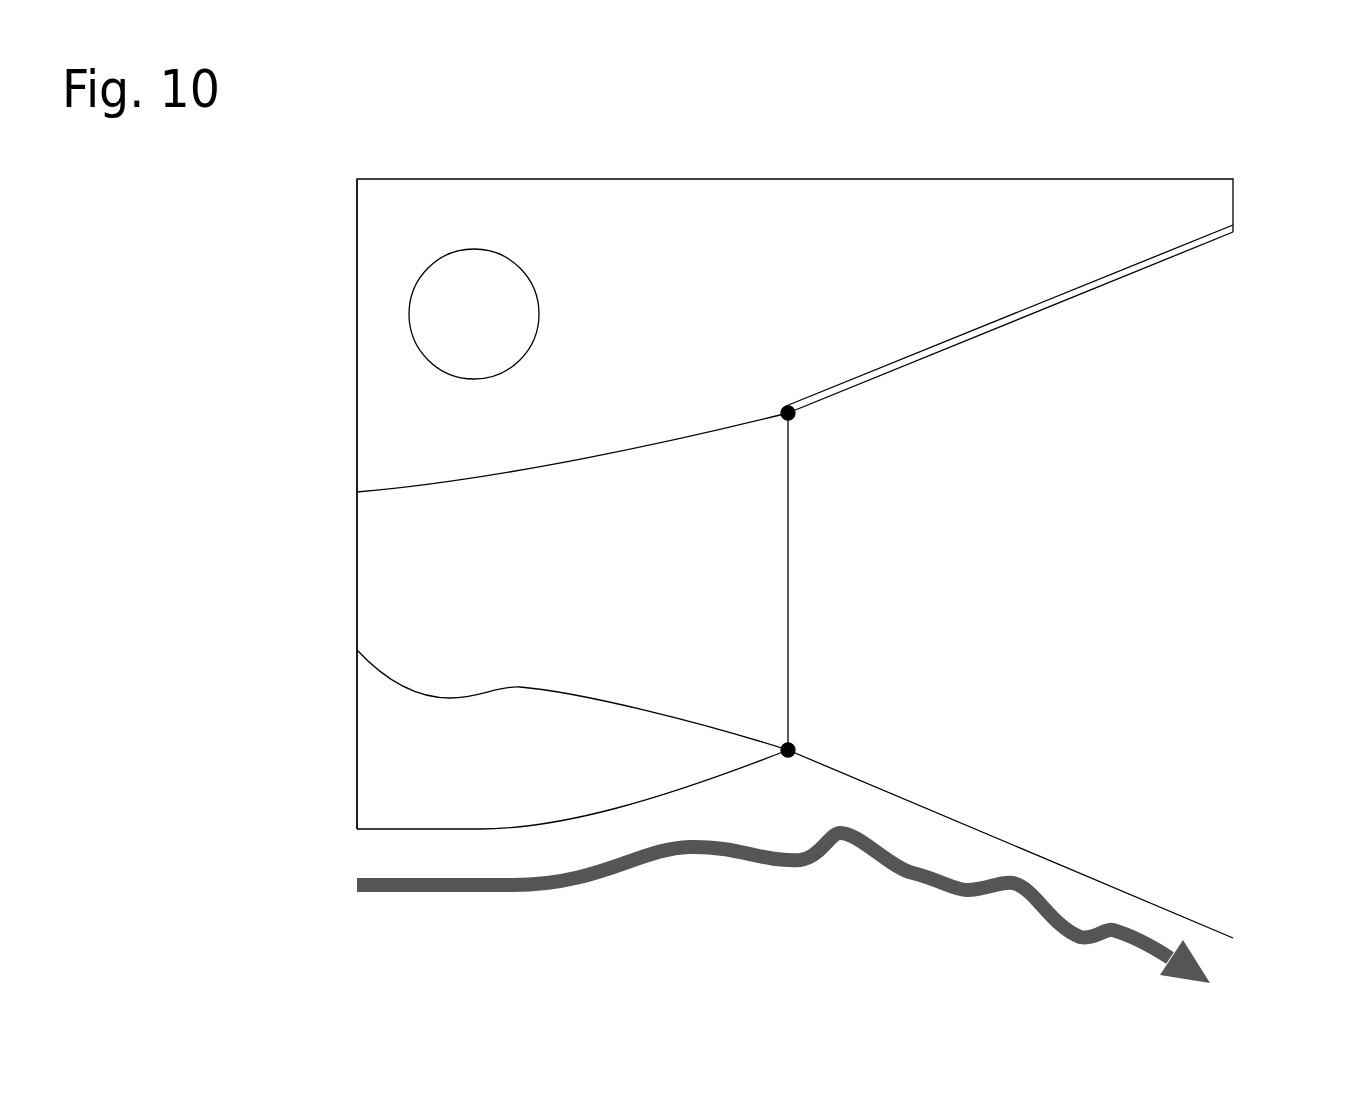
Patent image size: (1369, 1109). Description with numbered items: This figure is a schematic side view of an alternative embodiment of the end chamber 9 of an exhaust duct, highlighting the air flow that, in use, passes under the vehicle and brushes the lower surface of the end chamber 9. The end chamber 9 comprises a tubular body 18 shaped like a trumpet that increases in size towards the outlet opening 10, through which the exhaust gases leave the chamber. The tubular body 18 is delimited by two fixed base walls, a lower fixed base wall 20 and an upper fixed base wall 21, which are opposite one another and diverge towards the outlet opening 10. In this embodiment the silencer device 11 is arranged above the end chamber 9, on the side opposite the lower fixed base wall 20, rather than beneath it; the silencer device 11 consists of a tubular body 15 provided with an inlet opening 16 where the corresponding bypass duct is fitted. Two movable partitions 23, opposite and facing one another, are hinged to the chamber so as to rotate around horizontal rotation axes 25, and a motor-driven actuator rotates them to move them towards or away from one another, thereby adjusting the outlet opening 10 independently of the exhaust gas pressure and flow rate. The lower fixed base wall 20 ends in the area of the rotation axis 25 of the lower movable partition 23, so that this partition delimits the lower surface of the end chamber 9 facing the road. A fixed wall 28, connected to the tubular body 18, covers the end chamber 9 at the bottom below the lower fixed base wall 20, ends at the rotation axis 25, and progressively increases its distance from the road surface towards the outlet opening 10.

The end chamber 9 is at (196, 866).
The outlet opening 10 is at (722, 553).
The silencer device 11 is at (305, 437).
The tubular body 15 is at (619, 243).
The inlet opening 16 is at (452, 311).
The tubular body 18 is at (214, 633).
The fixed base wall 20 is at (682, 717).
The fixed base wall 21 is at (690, 445).
The movable partition 23 is at (1082, 297).
The rotation axis 25 is at (778, 403).
The fixed wall 28 is at (525, 830).